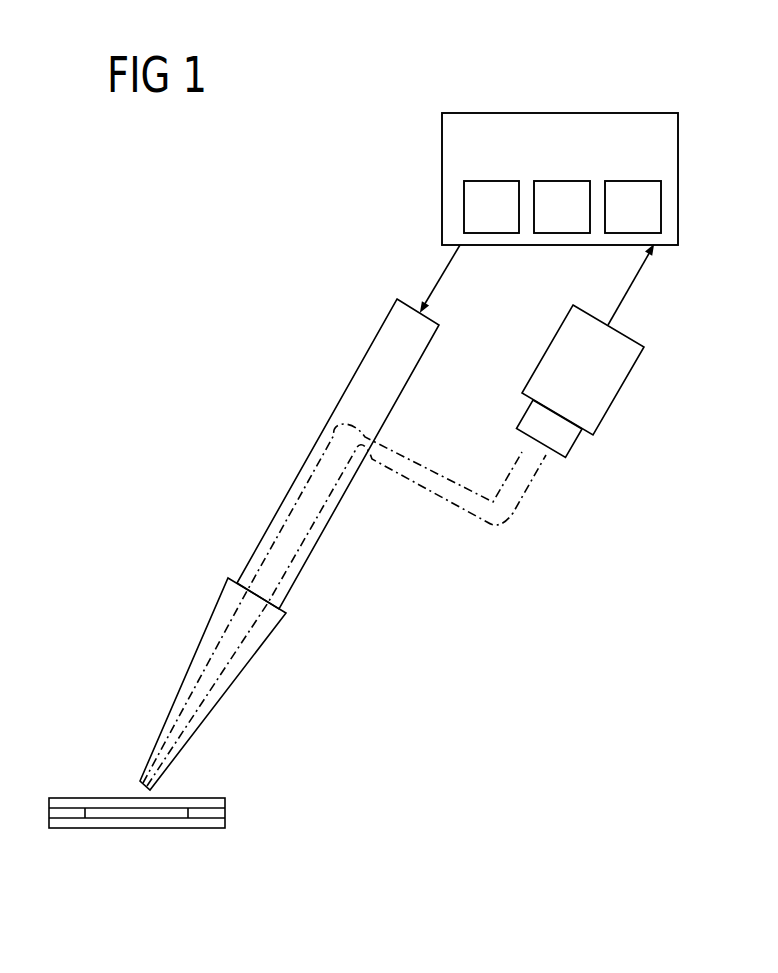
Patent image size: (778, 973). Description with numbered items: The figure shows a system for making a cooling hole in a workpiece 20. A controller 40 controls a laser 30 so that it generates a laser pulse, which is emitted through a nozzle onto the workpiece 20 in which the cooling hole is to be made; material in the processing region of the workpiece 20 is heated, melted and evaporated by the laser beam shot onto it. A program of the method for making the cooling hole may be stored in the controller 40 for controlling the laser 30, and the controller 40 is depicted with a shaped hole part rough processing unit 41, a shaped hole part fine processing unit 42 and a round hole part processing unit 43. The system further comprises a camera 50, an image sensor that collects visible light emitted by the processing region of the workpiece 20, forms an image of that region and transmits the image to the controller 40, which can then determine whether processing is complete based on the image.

The workpiece 20 is at (112, 823).
The laser 30 is at (367, 373).
The controller 40 is at (490, 160).
The shaped hole part rough processing unit 41 is at (508, 222).
The shaped hole part fine processing unit 42 is at (577, 222).
The round hole part processing unit 43 is at (648, 222).
The camera 50 is at (597, 391).